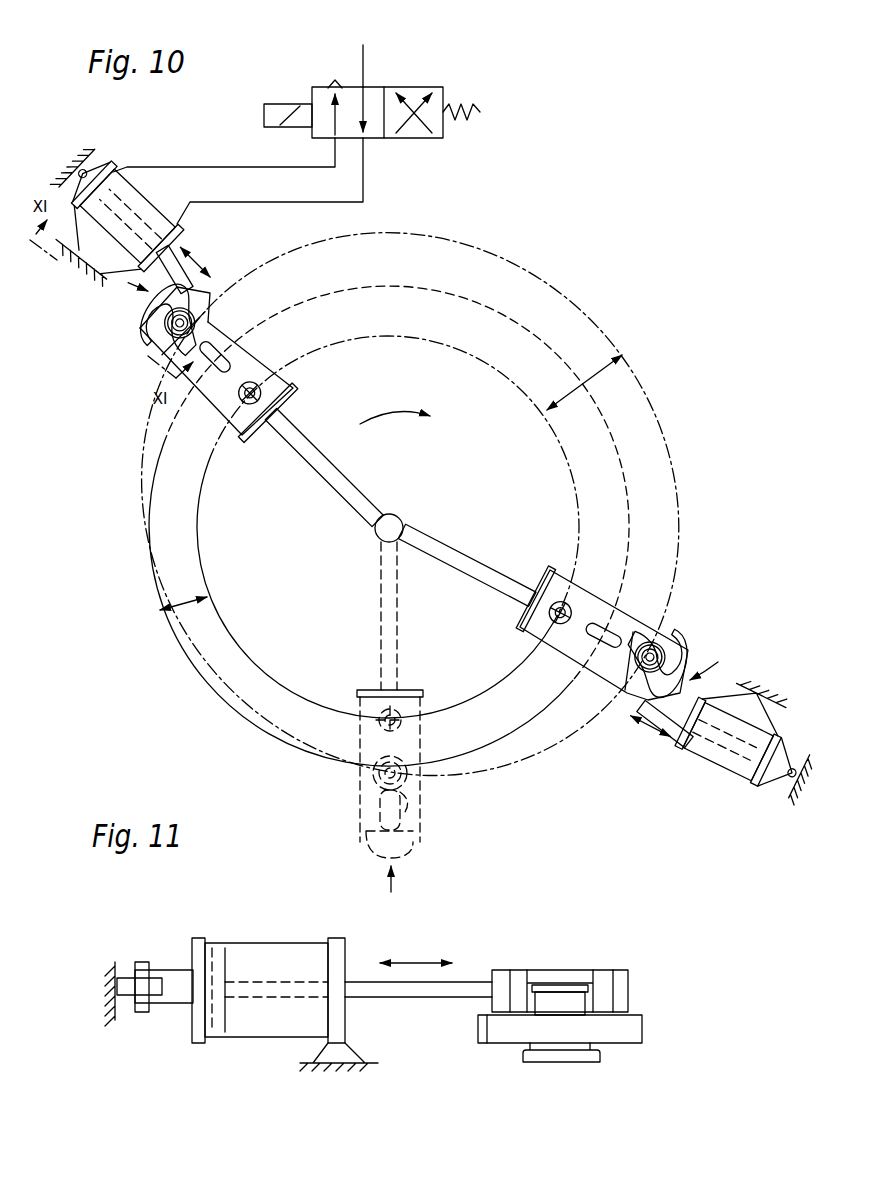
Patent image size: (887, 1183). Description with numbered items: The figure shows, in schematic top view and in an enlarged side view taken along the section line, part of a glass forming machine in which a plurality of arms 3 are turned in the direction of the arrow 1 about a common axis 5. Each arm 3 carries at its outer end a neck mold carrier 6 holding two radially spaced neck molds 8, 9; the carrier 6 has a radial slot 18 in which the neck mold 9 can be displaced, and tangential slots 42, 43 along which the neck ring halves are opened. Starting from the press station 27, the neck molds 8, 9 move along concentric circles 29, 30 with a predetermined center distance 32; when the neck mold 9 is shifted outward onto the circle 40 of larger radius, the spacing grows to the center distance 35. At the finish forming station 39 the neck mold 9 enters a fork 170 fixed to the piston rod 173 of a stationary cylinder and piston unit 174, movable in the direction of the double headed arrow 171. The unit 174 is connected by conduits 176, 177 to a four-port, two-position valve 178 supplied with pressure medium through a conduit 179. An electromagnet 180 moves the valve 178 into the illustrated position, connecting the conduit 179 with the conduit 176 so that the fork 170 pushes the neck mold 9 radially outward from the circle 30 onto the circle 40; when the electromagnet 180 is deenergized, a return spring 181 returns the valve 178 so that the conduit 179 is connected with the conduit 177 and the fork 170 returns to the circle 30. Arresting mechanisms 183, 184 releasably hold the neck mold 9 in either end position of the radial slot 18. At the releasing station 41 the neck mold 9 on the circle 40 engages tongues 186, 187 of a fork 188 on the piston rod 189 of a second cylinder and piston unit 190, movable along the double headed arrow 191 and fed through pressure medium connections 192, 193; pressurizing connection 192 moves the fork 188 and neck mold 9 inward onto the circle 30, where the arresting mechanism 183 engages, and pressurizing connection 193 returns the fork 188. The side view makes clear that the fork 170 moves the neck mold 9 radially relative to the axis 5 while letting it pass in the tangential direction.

In FIG. 10, the arrow (direction of arm movement) 1 is at (372, 421).
In FIG. 10, the arm 3 is at (349, 484).
In FIG. 10, the common axis 5 is at (402, 518).
In FIG. 10, the neck mold carrier 6 is at (252, 360).
In FIG. 11, the neck mold carrier 6 is at (644, 1030).
In FIG. 10, the neck mold 8 is at (263, 394).
In FIG. 10, the neck mold 9 is at (165, 331).
In FIG. 11, the neck mold 9 is at (578, 1003).
In FIG. 10, the radial slot 18 is at (373, 817).
In FIG. 10, the press station 27 is at (391, 891).
In FIG. 10, the circle 29 is at (233, 640).
In FIG. 10, the circle 30 is at (178, 667).
In FIG. 10, the center distance 32 is at (160, 607).
In FIG. 10, the center distance 35 is at (628, 360).
In FIG. 10, the finish forming station 39 is at (128, 284).
In FIG. 10, the circle 40 is at (508, 247).
In FIG. 10, the releasing station 41 is at (723, 662).
In FIG. 10, the tangential slot 42 is at (416, 723).
In FIG. 10, the tangential slot 43 is at (404, 856).
In FIG. 10, the fork 170 is at (212, 300).
In FIG. 11, the fork 170 is at (572, 968).
In FIG. 10, the double headed arrow 171 is at (206, 256).
In FIG. 11, the double headed arrow 171 is at (412, 960).
In FIG. 10, the piston rod 173 is at (194, 243).
In FIG. 11, the piston rod 173 is at (405, 999).
In FIG. 10, the cylinder and piston unit 174 is at (139, 194).
In FIG. 11, the cylinder and piston unit 174 is at (258, 1042).
In FIG. 10, the conduit 176 is at (367, 187).
In FIG. 11, the conduit 176 is at (320, 940).
In FIG. 10, the conduit 177 is at (228, 166).
In FIG. 11, the conduit 177 is at (210, 940).
In FIG. 10, the four-port, two-position valve 178 is at (448, 136).
In FIG. 10, the conduit 179 is at (364, 64).
In FIG. 10, the electromagnet 180 is at (277, 103).
In FIG. 10, the return spring 181 is at (482, 110).
In FIG. 10, the arresting mechanism 183 is at (222, 392).
In FIG. 10, the arresting mechanism 184 is at (418, 805).
In FIG. 10, the tongue 186 is at (655, 633).
In FIG. 10, the tongue 187 is at (686, 656).
In FIG. 10, the fork 188 is at (622, 684).
In FIG. 10, the piston rod 189 is at (640, 708).
In FIG. 10, the cylinder and piston unit 190 is at (730, 772).
In FIG. 10, the double headed arrow 191 is at (650, 739).
In FIG. 10, the pressure medium connection 192 is at (751, 793).
In FIG. 10, the pressure medium connection 193 is at (685, 760).